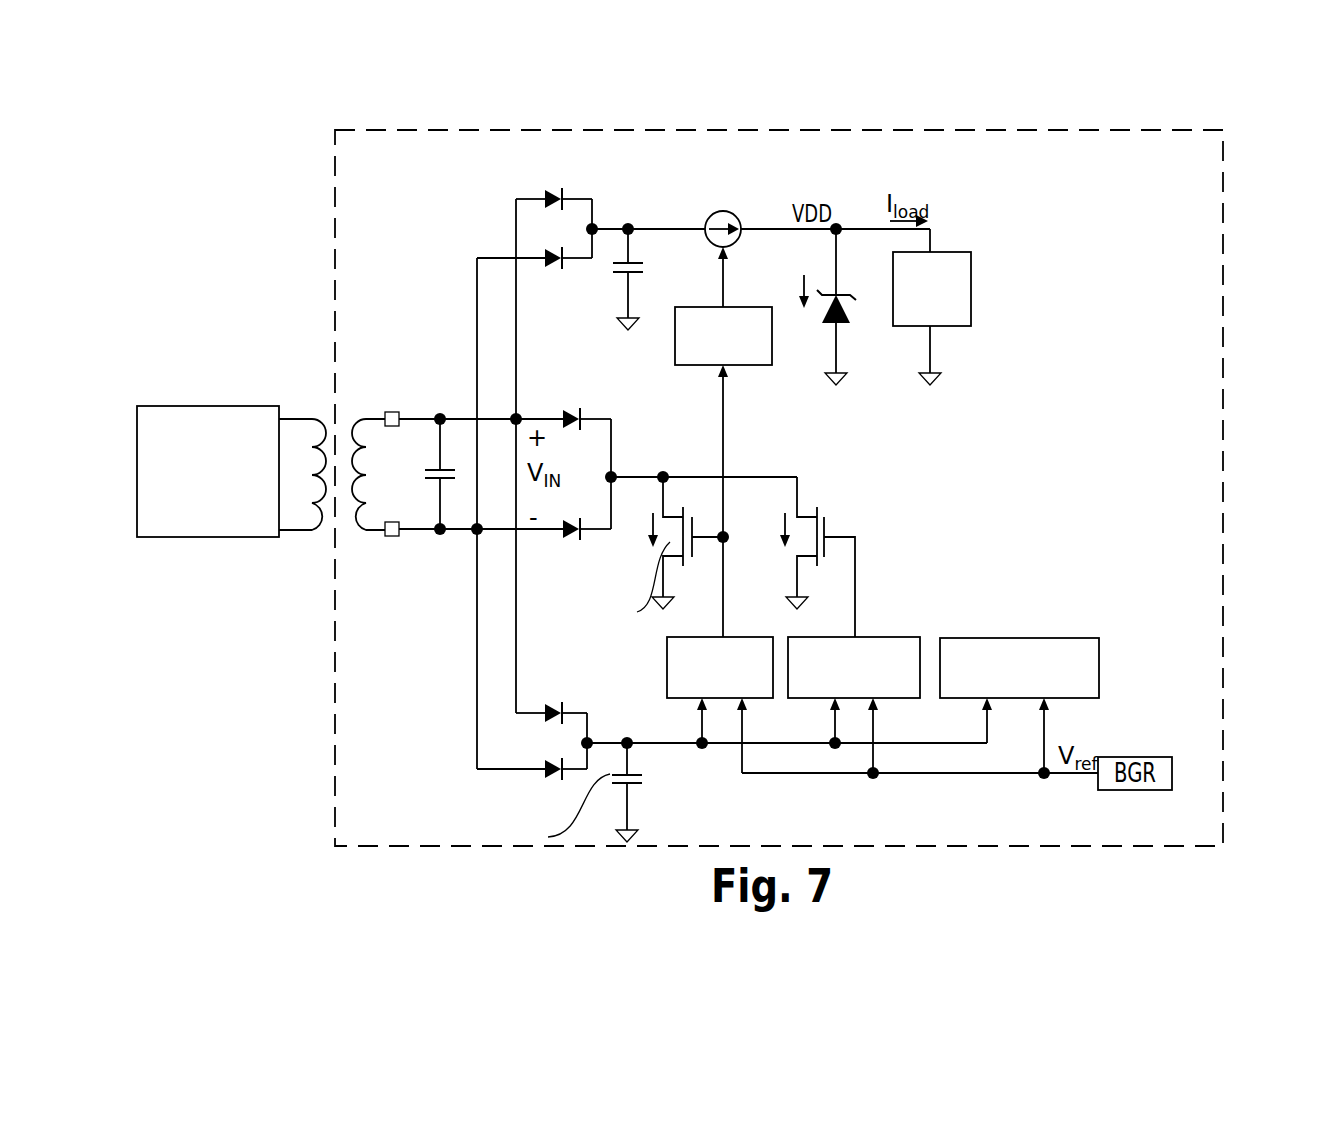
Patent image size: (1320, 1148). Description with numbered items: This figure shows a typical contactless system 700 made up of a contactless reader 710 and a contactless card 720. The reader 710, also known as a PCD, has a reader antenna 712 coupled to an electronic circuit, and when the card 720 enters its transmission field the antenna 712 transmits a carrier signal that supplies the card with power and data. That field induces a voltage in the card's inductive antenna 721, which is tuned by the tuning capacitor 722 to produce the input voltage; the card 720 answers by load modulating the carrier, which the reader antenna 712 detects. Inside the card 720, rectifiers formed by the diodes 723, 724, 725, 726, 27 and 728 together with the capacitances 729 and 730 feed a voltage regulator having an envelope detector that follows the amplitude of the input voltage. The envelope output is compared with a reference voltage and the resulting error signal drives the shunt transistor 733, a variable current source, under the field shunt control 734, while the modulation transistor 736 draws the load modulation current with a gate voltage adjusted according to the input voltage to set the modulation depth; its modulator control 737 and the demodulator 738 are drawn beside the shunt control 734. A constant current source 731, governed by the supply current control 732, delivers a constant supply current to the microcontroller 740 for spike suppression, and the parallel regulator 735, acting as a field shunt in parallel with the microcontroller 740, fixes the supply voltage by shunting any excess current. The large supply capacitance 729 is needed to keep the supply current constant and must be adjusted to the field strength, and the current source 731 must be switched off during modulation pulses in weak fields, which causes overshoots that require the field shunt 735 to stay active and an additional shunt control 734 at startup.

The contactless system 700 is at (1152, 112).
The contactless reader 710 is at (203, 405).
The reader antenna 712 is at (293, 418).
The contactless card 720 is at (1223, 235).
The inductive antenna 721 is at (367, 418).
The tuning capacitor 722 is at (433, 475).
The rectifier diode 723 is at (545, 190).
The rectifier diode 724 is at (547, 268).
The rectifier diode 725 is at (563, 410).
The rectifier diode 726 is at (565, 537).
The envelope detector diode 27 is at (547, 702).
The rectifier diode 728 is at (548, 780).
The supply capacitance 729 is at (632, 262).
The capacitance 730 is at (647, 787).
The constant current source 731 is at (732, 212).
The supply current control 732 is at (748, 367).
The shunt transistor 733 is at (675, 505).
The field shunt control 734 is at (733, 635).
The parallel regulator 735 is at (822, 307).
The modulation transistor 736 is at (800, 503).
The modulator control 737 is at (877, 635).
The demodulator 738 is at (1037, 637).
The microcontroller 740 is at (972, 265).